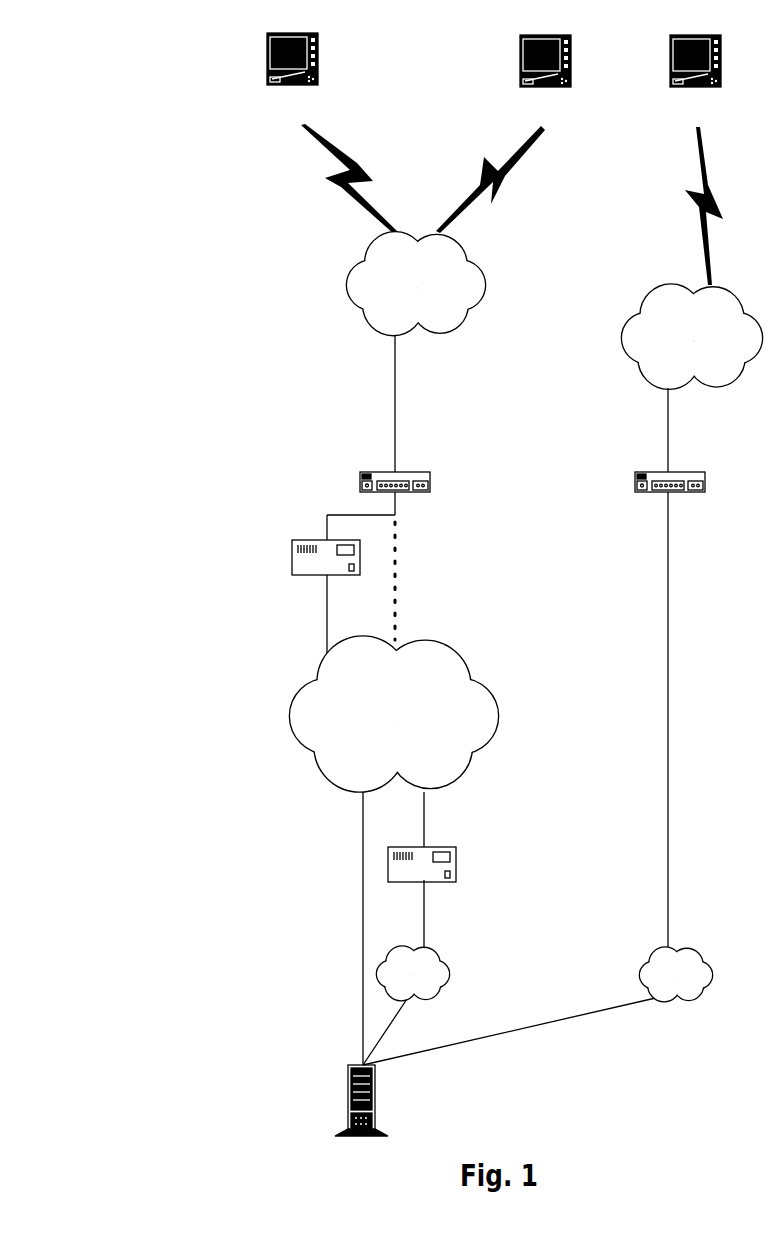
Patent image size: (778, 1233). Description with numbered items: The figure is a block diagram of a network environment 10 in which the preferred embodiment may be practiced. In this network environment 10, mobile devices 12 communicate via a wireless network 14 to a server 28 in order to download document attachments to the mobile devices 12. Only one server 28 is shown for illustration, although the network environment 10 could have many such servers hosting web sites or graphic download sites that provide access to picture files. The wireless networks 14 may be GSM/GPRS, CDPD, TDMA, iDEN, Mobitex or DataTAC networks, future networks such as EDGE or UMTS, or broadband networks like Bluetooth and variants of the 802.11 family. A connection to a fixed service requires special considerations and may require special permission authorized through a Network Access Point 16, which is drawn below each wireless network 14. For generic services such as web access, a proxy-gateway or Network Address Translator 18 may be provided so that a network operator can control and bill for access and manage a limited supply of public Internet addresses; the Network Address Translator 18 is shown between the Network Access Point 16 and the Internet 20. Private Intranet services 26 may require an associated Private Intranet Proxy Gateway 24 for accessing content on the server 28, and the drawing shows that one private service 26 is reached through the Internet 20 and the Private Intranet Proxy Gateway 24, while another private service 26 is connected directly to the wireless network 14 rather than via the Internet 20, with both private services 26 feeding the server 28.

The network environment 10 is at (98, 470).
The mobile device 12 is at (308, 131).
The wireless network 14 is at (554, 310).
The Network Access Point 16 is at (360, 478).
The Network Address Translator 18 is at (292, 553).
The Internet 20 is at (394, 714).
The Private Intranet Proxy Gateway 24 is at (457, 862).
The private Intranet service 26 is at (544, 974).
The server 28 is at (348, 1100).